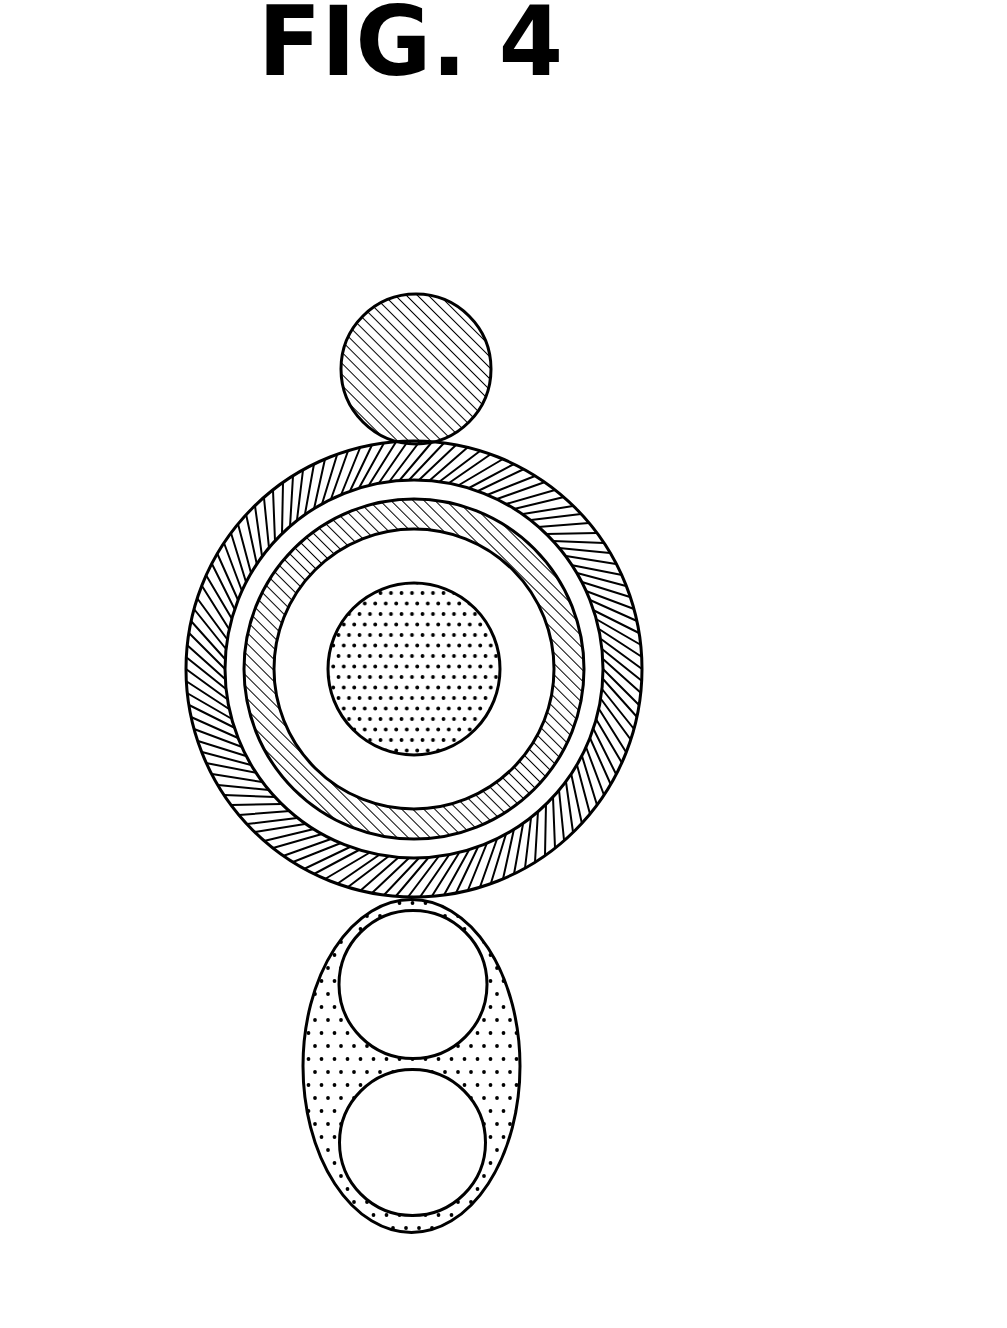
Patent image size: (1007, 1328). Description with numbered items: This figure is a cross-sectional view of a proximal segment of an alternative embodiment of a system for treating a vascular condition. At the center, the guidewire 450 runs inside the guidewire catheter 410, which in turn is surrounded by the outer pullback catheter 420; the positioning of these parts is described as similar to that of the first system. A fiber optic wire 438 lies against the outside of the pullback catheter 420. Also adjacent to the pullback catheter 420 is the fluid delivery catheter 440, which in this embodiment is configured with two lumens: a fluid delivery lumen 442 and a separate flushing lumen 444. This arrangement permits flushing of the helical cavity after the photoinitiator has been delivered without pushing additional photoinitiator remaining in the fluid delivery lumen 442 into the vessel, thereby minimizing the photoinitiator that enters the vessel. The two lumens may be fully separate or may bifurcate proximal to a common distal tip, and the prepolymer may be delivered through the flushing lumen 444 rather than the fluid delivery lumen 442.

The guidewire catheter 410 is at (275, 573).
The pullback catheter 420 is at (203, 603).
The fiber optic wire 438 is at (460, 352).
The fluid delivery catheter 440 is at (307, 1026).
The fluid delivery lumen 442 is at (443, 981).
The flushing lumen 444 is at (444, 1145).
The guidewire 450 is at (455, 667).